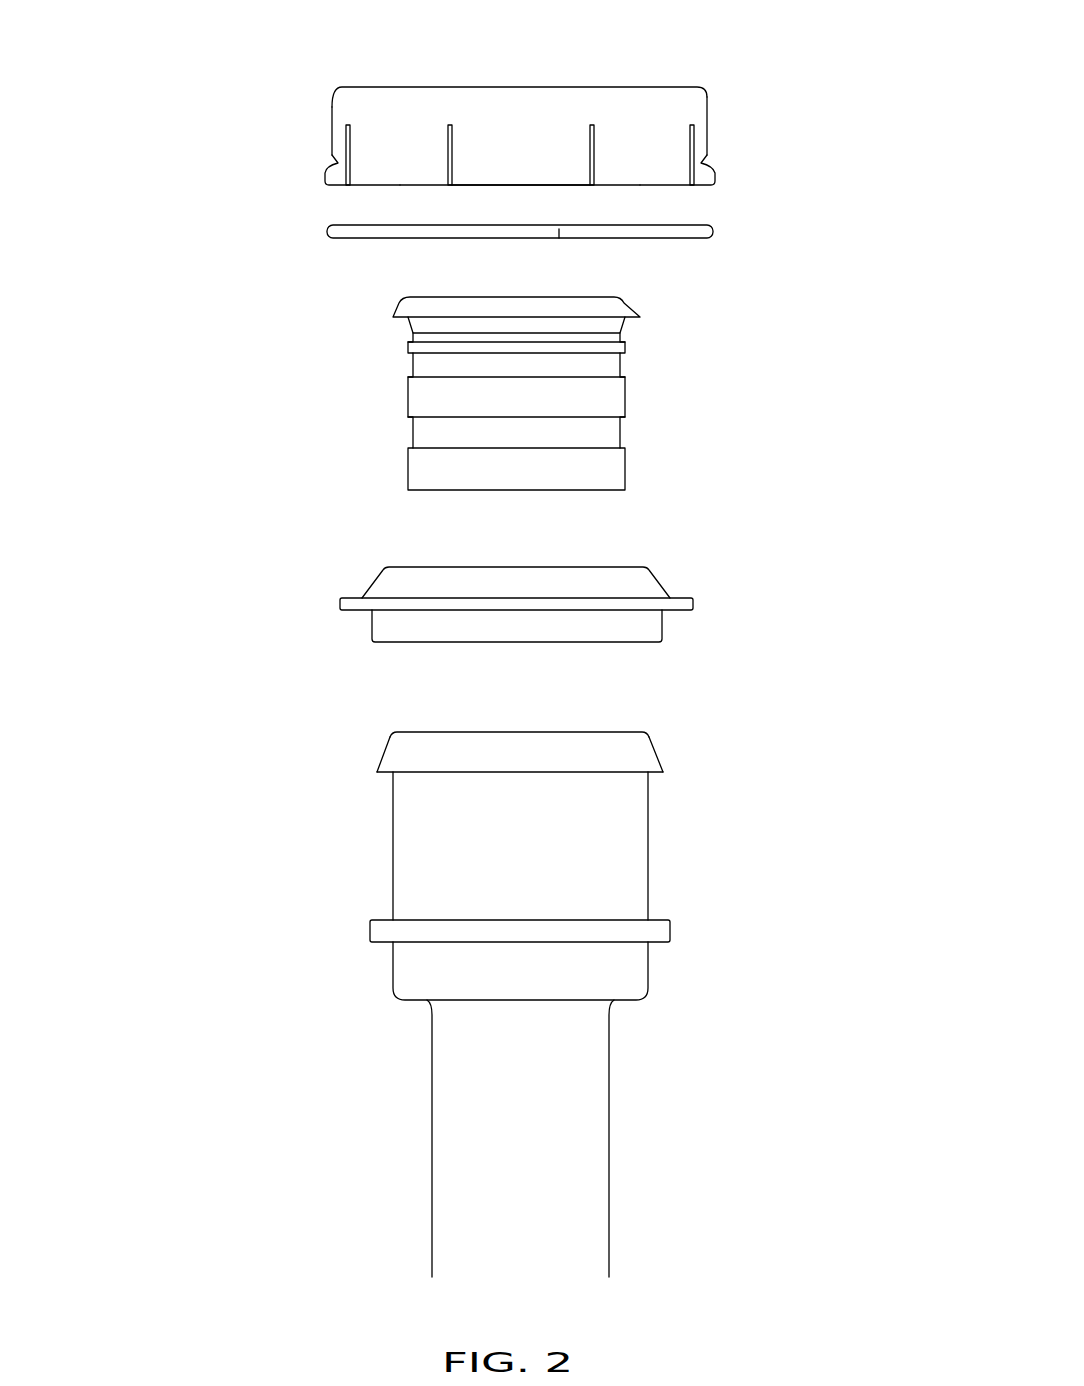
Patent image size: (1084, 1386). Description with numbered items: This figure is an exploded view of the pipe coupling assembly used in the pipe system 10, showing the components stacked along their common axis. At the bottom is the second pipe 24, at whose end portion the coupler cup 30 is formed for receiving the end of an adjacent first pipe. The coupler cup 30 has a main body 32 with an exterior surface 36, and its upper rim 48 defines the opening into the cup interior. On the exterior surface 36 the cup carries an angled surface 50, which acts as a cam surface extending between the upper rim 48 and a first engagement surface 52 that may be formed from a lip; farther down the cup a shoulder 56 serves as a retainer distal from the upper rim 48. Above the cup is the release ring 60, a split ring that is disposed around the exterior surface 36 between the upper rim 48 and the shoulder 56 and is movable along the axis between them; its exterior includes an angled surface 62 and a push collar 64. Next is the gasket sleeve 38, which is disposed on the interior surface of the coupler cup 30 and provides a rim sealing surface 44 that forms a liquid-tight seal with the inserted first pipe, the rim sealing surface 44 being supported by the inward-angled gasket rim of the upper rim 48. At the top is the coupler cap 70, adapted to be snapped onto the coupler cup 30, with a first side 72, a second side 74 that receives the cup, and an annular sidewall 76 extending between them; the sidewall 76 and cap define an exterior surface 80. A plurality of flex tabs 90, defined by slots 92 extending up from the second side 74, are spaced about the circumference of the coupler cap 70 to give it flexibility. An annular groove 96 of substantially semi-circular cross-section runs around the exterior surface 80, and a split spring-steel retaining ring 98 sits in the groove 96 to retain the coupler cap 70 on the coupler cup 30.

The pipe system 10 is at (92, 46).
The second pipe 24 is at (608, 1223).
The coupler cup 30 is at (647, 827).
The main body 32 is at (648, 885).
The exterior surface 36 is at (430, 848).
The gasket sleeve 38 is at (628, 378).
The rim sealing surface 44 is at (620, 300).
The upper rim 48 is at (647, 732).
The angled surface 50 is at (655, 755).
The first engagement surface 52 is at (378, 771).
The shoulder 56 is at (370, 933).
The release ring 60 is at (603, 563).
The angled surface 62 is at (662, 582).
The push collar 64 is at (693, 607).
The coupler cap 70 is at (675, 80).
The first side 72 is at (350, 87).
The second side 74 is at (363, 185).
The sidewall 76 is at (333, 118).
The exterior surface 80 is at (513, 145).
The flex tabs 90 is at (507, 165).
The slots 92 is at (450, 125).
The annular groove 96 is at (702, 165).
The retaining ring 98 is at (713, 233).